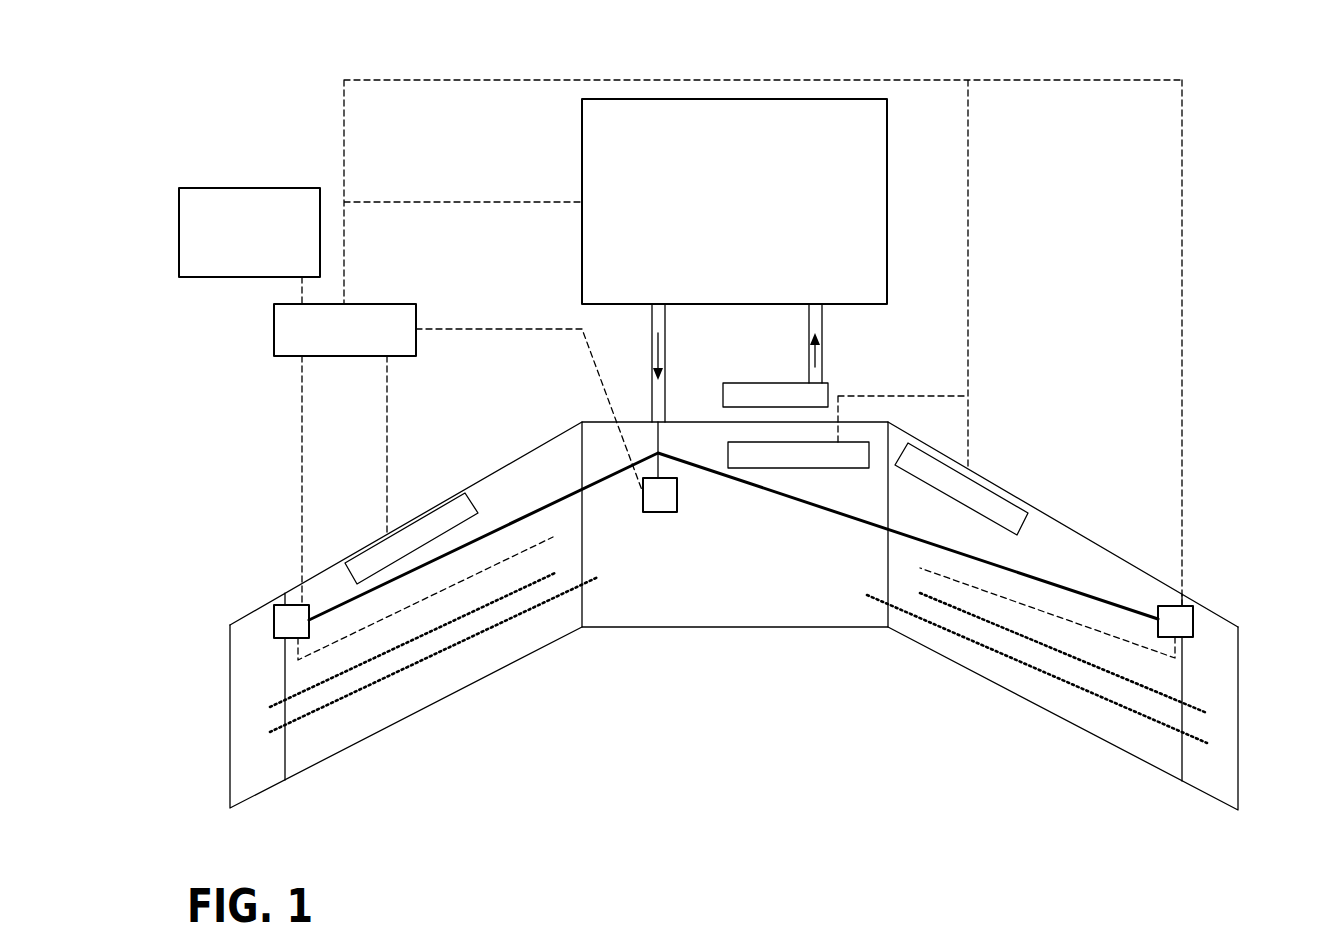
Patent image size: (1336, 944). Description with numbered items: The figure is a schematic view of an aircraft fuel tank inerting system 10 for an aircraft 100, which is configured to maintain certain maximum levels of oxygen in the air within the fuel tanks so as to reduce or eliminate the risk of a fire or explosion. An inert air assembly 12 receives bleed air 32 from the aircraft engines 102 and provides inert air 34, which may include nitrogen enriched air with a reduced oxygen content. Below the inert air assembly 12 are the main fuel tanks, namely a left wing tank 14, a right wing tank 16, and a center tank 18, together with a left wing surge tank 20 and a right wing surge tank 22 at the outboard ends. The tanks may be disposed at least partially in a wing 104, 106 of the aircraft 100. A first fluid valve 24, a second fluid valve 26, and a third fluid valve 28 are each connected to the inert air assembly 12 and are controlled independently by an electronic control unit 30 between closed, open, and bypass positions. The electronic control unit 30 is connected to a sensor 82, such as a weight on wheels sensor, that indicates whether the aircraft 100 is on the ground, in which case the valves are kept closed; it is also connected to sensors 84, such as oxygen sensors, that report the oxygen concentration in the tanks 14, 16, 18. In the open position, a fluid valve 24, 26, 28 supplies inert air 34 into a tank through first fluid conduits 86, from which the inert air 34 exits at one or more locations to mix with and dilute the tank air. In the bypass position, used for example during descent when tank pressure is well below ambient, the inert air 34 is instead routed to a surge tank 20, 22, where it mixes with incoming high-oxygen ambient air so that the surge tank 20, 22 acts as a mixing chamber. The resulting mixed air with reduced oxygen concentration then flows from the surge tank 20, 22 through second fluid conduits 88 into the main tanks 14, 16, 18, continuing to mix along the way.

The aircraft fuel tank inerting system 10 is at (1192, 51).
The aircraft 100 is at (230, 86).
The sensor 82 is at (259, 238).
The electronic control unit 30 is at (357, 343).
The inert air assembly 12 is at (747, 221).
The inert air 34 is at (655, 358).
The bleed air 32 is at (818, 358).
The aircraft engines 102 is at (763, 393).
The center tank 18 is at (730, 606).
The left wing tank 14 is at (422, 702).
The right wing tank 16 is at (1119, 731).
The left wing surge tank 20 is at (247, 723).
The right wing surge tank 22 is at (1217, 735).
The first fluid valve 24 is at (284, 618).
The second fluid valve 26 is at (1186, 619).
The third fluid valve 28 is at (662, 493).
The sensors 84 is at (431, 522).
The first fluid conduits 86 is at (517, 553).
The second fluid conduits 88 is at (437, 630).
The wing 104 is at (488, 472).
The wing 106 is at (1060, 518).